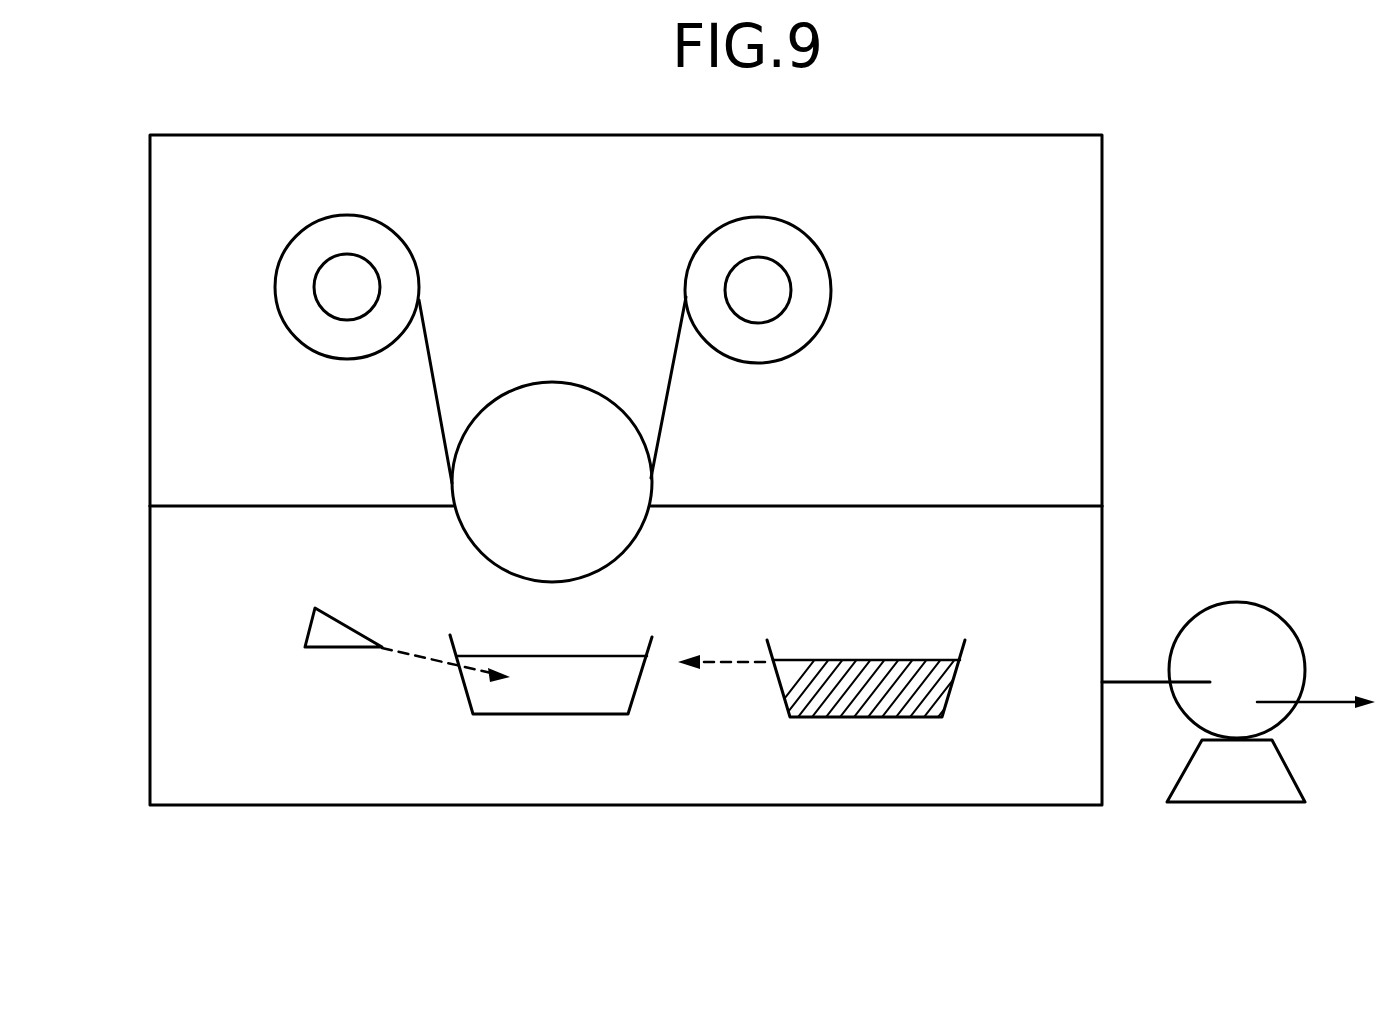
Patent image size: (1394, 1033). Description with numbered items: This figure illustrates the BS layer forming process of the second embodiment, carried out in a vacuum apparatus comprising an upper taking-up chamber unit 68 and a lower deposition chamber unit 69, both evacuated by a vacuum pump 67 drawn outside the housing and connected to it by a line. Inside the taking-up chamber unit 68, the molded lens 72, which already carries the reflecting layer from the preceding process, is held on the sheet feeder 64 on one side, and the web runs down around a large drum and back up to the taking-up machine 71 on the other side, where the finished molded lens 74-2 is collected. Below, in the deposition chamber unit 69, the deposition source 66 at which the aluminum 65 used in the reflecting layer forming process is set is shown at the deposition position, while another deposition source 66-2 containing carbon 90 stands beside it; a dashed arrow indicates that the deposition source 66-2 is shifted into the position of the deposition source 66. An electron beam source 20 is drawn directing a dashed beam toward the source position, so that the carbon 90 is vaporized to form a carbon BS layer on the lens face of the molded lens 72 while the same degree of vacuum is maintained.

The light source / lamp 20 is at (308, 622).
The sheet feeder 64 is at (343, 292).
The aluminum 65 is at (617, 680).
The deposition source 66 is at (513, 714).
The deposition source 66-2 is at (863, 717).
The vacuum pump 67 is at (1252, 642).
The taking-up chamber unit 68 is at (1057, 306).
The deposition chamber unit 69 is at (1057, 558).
The taking-up machine 71 is at (770, 296).
The molded lens 72 is at (305, 250).
The molded lens 74-2 is at (795, 245).
The carbon 90 is at (898, 680).